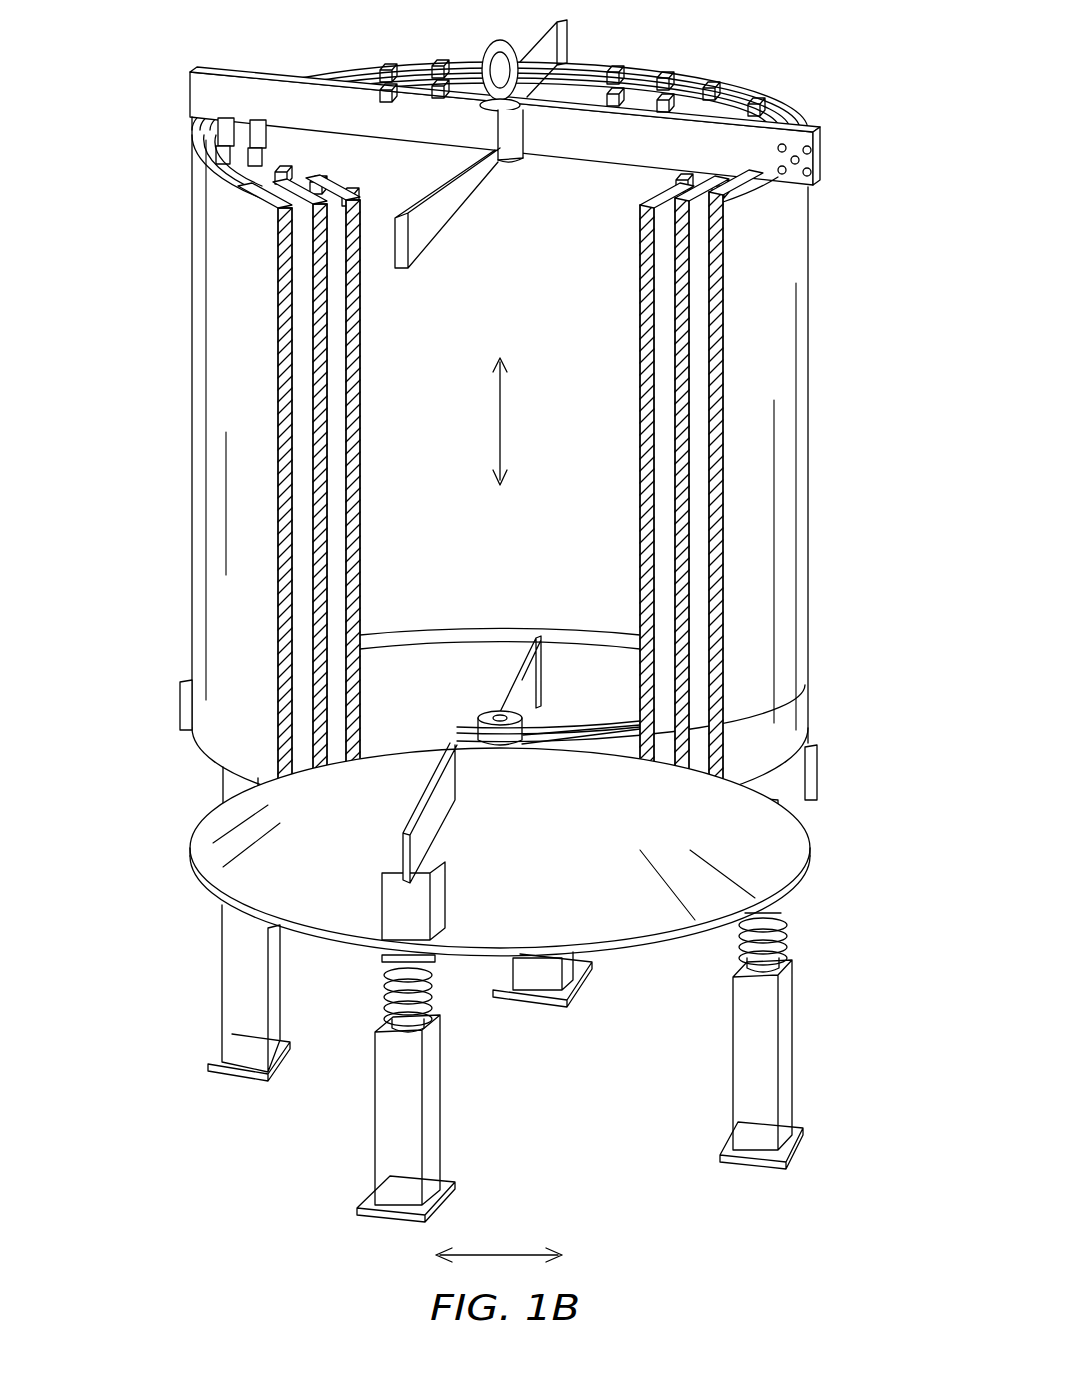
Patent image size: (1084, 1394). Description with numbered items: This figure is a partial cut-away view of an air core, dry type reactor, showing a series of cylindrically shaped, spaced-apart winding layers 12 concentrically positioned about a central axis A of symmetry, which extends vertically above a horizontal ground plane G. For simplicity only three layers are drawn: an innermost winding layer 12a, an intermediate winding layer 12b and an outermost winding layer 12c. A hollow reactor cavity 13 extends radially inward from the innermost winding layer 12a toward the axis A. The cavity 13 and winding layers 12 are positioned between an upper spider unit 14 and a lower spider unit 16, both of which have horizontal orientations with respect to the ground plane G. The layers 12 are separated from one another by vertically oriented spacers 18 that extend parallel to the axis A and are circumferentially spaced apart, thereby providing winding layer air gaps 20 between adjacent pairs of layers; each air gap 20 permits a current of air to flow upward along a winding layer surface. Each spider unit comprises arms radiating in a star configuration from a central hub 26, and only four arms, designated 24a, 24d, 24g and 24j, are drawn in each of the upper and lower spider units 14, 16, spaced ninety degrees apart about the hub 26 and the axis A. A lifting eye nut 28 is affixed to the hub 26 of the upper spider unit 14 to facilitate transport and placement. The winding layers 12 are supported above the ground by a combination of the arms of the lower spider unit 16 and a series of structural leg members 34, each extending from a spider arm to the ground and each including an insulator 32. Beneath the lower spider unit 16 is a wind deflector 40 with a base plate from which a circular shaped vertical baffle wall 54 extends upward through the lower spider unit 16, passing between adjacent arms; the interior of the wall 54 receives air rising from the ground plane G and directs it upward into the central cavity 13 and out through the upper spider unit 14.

The winding layers 12 is at (780, 256).
The innermost winding layer 12a is at (360, 462).
The intermediate winding layer 12b is at (327, 420).
The outermost winding layer 12c is at (293, 388).
The hollow reactor cavity 13 is at (396, 176).
The upper spider unit 14 is at (845, 148).
The lower spider unit 16 is at (838, 808).
The spacers 18 is at (652, 92).
The winding layer air gaps 20 is at (335, 333).
The spider arm 24a is at (822, 128).
The spider arm 24d is at (460, 210).
The spider arm 24g is at (236, 70).
The spider arm 24j is at (565, 25).
The central hub 26 is at (508, 143).
The lifting eye nut 28 is at (487, 48).
The insulator 32 is at (788, 938).
The structural leg members 34 is at (280, 1007).
The wind deflector 40 is at (636, 972).
The circular shaped vertical baffle wall 54 is at (573, 797).
The central axis A is at (505, 418).
The horizontal ground plane G is at (507, 1245).